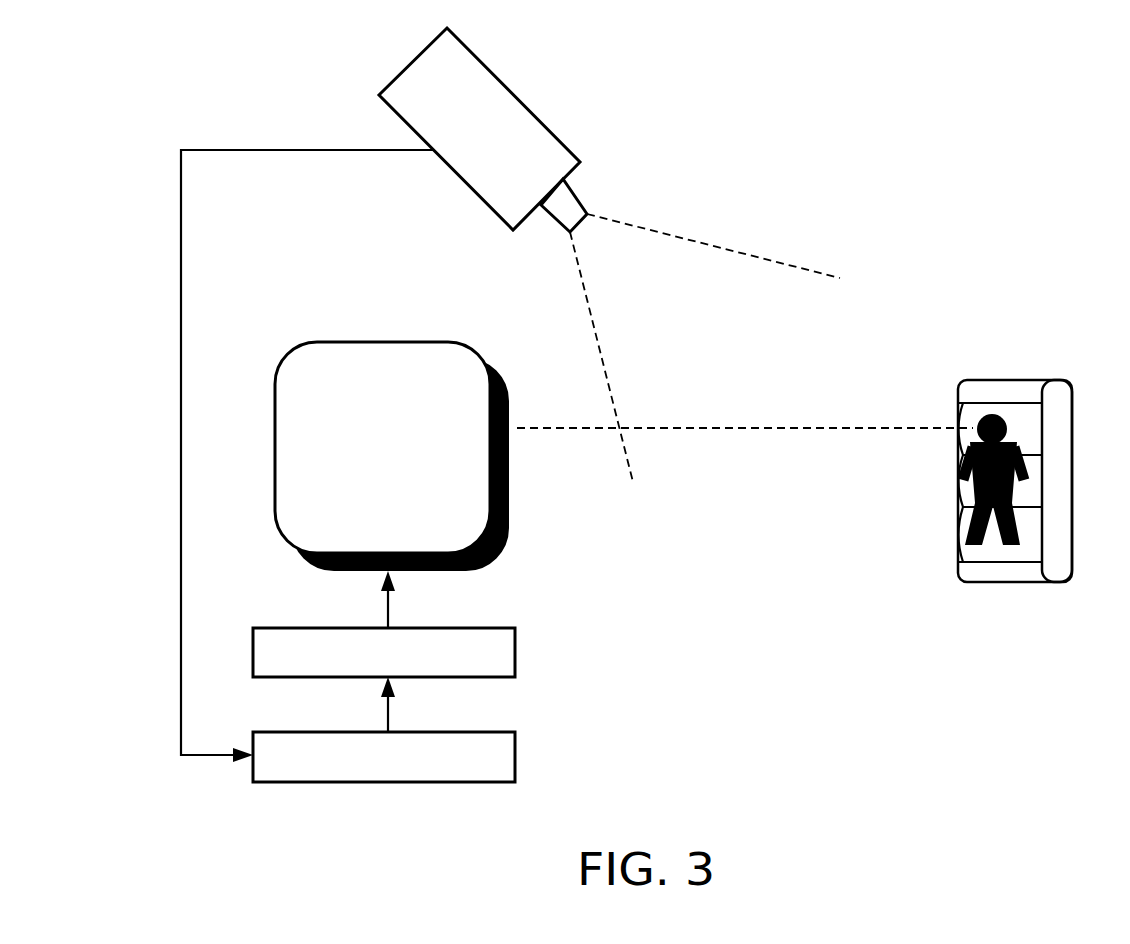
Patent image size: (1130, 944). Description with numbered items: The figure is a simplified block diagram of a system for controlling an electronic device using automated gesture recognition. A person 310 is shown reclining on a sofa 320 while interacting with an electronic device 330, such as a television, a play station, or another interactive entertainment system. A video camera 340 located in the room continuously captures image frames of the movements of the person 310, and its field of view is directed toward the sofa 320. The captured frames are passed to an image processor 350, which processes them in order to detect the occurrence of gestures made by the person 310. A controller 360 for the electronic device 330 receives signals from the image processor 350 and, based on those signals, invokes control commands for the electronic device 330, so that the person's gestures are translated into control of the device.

The person 310 is at (982, 480).
The sofa 320 is at (1020, 392).
The electronic device 330 is at (440, 357).
The video camera 340 is at (567, 147).
The image processor 350 is at (515, 747).
The controller 360 is at (515, 643).